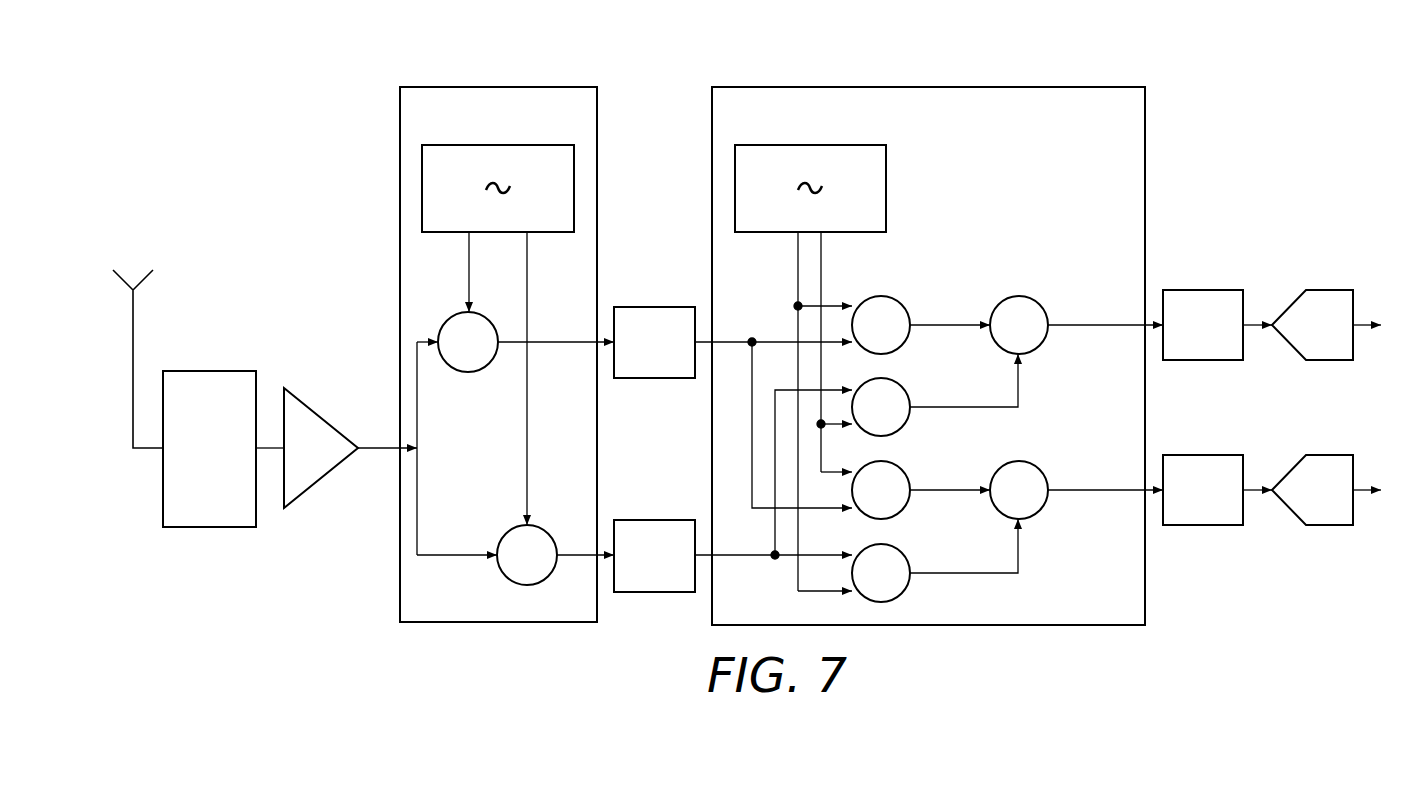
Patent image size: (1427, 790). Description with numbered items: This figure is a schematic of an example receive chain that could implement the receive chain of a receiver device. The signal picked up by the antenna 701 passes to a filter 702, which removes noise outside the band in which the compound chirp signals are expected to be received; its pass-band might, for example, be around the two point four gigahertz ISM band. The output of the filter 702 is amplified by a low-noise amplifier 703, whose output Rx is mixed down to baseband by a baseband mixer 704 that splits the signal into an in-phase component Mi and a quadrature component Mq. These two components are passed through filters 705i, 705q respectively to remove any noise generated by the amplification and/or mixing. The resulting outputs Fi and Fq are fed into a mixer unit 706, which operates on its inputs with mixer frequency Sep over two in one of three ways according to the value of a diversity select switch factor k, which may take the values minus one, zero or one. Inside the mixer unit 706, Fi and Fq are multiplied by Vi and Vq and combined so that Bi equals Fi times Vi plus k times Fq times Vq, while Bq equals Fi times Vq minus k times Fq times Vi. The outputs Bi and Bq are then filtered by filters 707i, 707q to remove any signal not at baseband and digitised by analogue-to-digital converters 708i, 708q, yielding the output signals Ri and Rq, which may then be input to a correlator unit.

The antenna 701 is at (164, 272).
The filter 702 is at (228, 371).
The low-noise amplifier 703 is at (322, 412).
The baseband mixer 704 is at (438, 87).
The filter 705i is at (655, 307).
The filter 705q is at (655, 520).
The mixer unit 706 is at (750, 87).
The filter 707i is at (1203, 290).
The filter 707q is at (1203, 455).
The analogue-to-digital converter 708i is at (1330, 290).
The analogue-to-digital converter 708q is at (1330, 455).